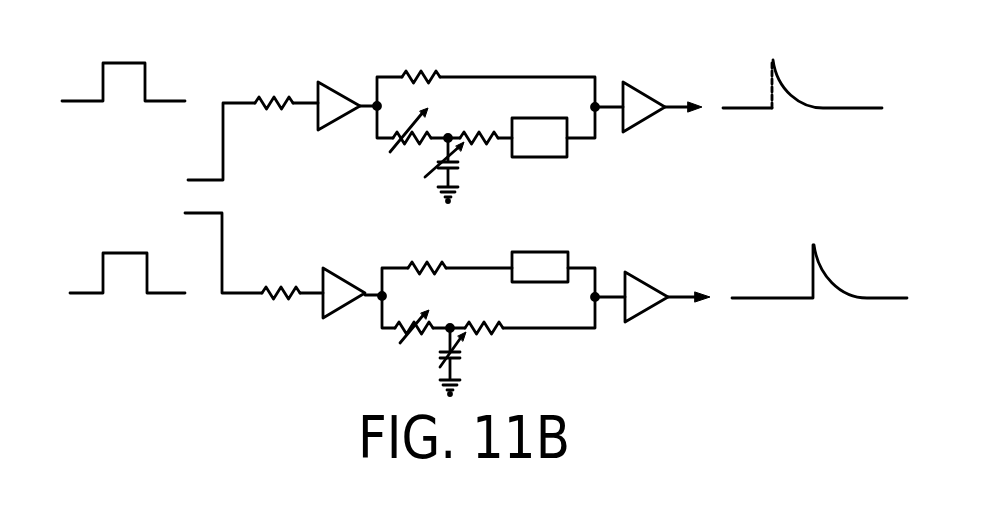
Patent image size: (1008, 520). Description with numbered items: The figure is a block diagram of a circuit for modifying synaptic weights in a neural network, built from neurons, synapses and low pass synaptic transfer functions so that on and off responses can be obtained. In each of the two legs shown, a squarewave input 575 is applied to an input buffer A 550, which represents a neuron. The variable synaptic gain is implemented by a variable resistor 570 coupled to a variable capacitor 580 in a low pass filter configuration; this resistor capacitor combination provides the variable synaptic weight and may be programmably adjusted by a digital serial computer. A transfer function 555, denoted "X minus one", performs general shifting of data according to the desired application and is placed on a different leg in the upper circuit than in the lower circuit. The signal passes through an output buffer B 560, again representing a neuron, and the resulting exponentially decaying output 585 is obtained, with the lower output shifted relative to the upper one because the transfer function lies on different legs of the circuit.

The squarewave input 575 is at (146, 70).
The input buffer A 550 is at (350, 54).
The output buffer B 560 is at (653, 56).
The variable resistor 570 is at (393, 360).
The variable capacitor 580 is at (478, 366).
The transfer function 555 is at (523, 157).
The exponentially decaying output 585 is at (790, 90).